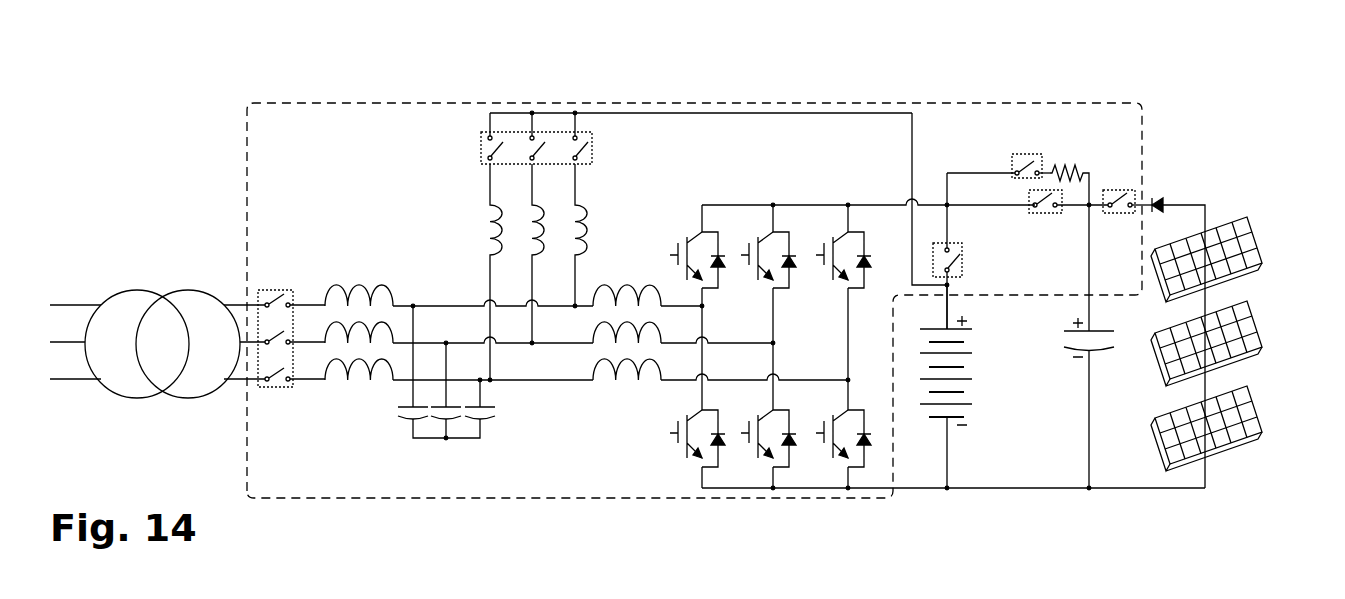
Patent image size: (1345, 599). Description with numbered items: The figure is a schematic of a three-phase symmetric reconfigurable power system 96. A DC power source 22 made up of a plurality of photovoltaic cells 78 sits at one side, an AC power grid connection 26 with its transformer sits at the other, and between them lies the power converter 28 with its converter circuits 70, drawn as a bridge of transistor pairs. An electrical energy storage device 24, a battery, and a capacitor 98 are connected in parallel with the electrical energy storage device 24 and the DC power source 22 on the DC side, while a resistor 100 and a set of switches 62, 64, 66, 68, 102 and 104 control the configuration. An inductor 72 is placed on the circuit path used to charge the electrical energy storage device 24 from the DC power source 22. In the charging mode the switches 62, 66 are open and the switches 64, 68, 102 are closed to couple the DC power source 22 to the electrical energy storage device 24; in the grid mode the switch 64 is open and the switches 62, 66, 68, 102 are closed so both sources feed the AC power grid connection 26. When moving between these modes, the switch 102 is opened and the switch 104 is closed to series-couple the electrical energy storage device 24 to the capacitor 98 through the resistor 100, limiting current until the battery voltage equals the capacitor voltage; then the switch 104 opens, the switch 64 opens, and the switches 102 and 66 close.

The reconfigurable power system 96 is at (118, 86).
The power converter 28 is at (246, 197).
The AC power grid connection 26 is at (104, 282).
The switch 66 is at (276, 389).
The switch 64 is at (480, 148).
The inductor 72 is at (488, 232).
The converter circuits 70 is at (664, 417).
The switch 62 is at (960, 243).
The switch 104 is at (1012, 165).
The resistor 100 is at (1071, 166).
The switch 102 is at (1029, 196).
The switch 68 is at (1128, 214).
The DC power source 22 is at (1243, 332).
The photovoltaic cells 78 is at (1248, 275).
The electrical energy storage device 24 is at (979, 400).
The capacitor 98 is at (1095, 359).